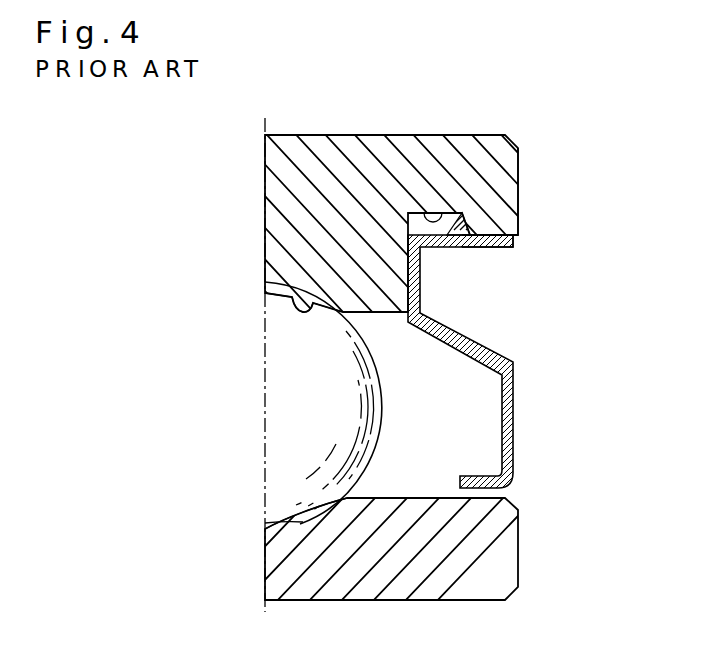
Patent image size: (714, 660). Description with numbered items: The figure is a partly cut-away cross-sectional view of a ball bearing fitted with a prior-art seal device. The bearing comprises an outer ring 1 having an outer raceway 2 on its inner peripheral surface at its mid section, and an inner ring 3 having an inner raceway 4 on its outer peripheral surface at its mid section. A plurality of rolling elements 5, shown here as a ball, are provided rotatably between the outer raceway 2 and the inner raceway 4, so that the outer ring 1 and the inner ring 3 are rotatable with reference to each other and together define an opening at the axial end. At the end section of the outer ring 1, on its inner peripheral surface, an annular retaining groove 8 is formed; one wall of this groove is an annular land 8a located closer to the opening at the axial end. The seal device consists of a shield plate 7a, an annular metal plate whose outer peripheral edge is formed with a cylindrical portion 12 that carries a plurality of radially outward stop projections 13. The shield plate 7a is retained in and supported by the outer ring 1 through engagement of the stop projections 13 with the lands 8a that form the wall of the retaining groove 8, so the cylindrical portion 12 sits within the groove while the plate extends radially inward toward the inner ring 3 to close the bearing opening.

The outer ring 1 is at (378, 150).
The outer raceway 2 is at (297, 312).
The inner ring 3 is at (515, 552).
The inner raceway 4 is at (300, 518).
The rolling elements 5 is at (372, 418).
The shield plate 7a is at (514, 432).
The retaining groove 8 is at (430, 211).
The annular land 8a is at (497, 206).
The cylindrical portion 12 is at (512, 242).
The stop projections 13 is at (520, 168).